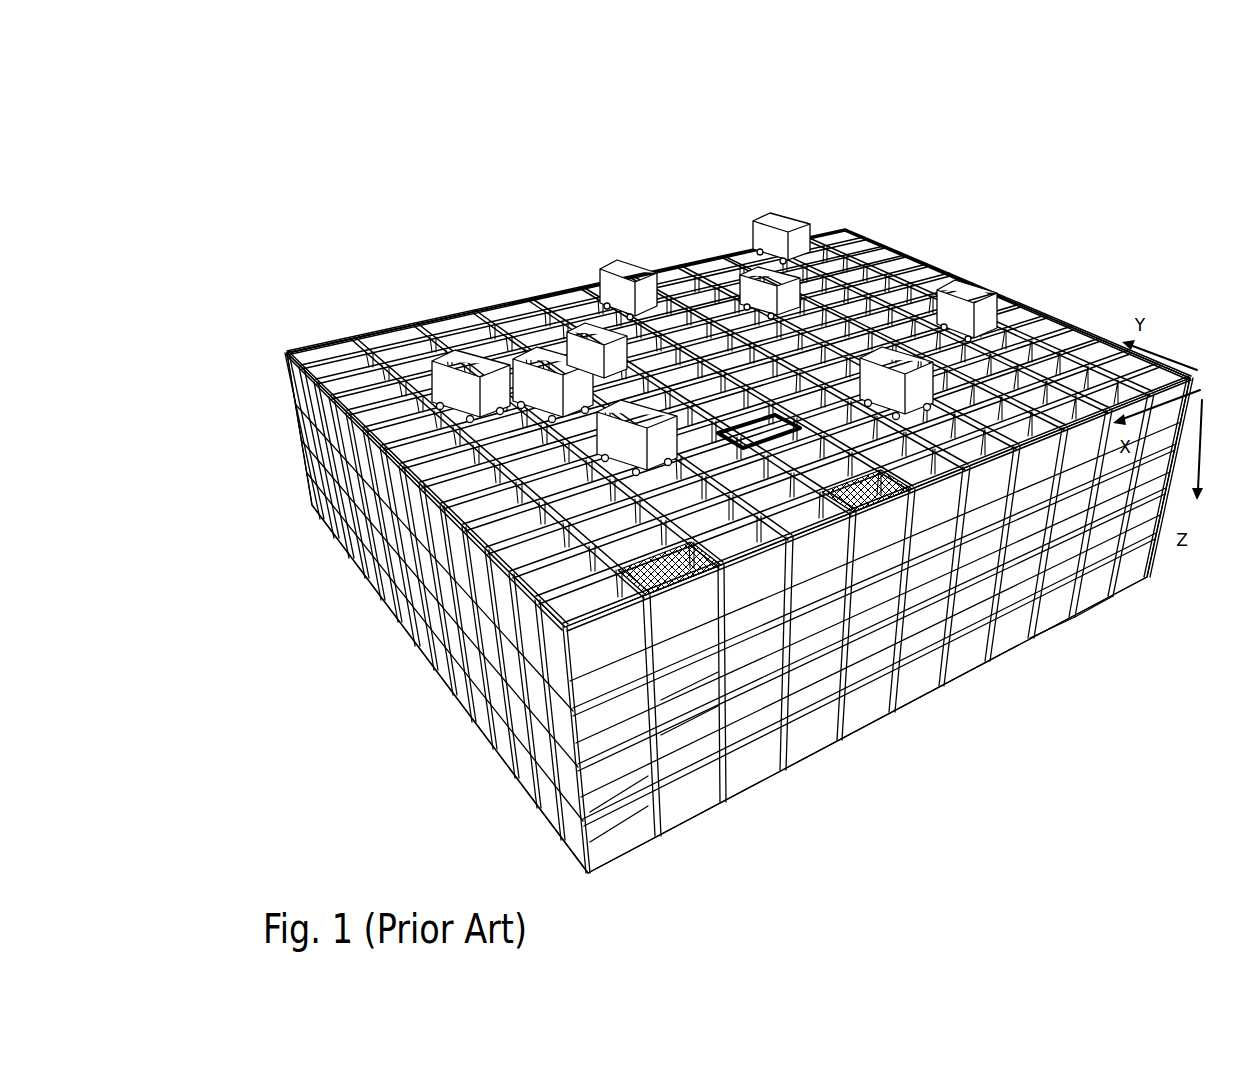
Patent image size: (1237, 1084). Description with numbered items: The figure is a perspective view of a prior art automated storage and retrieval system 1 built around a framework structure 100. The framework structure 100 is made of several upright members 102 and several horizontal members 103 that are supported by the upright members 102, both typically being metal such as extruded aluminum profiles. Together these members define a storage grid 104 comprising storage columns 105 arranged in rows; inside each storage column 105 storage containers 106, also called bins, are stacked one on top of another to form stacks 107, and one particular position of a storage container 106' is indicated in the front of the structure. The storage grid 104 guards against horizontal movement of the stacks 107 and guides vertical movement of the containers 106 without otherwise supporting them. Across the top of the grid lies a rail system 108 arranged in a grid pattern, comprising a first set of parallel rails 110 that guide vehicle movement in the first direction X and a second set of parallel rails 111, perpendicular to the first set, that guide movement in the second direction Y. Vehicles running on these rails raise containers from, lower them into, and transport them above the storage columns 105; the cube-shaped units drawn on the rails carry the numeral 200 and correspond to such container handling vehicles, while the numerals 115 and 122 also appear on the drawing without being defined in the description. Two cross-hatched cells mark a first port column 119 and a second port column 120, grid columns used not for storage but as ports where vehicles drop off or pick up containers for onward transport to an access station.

The automated storage and retrieval system 1 is at (668, 122).
The framework structure 100 is at (296, 525).
The upright members 102 is at (577, 740).
The horizontal members 103 is at (963, 577).
The storage grid 104 is at (292, 390).
The storage column 105 is at (480, 637).
The storage container 106 is at (738, 867).
The particular position of storage container 106' is at (745, 752).
The stack 107 is at (1050, 617).
The rail system 108 is at (1108, 347).
The first set of parallel rails 110 is at (1048, 377).
The second set of parallel rails 111 is at (568, 297).
The wheels of container handling vehicle 115 is at (1002, 350).
The first port column 119 is at (655, 558).
The second port column 120 is at (870, 490).
The grid opening 122 is at (737, 420).
The container handling vehicle 200 is at (807, 222).